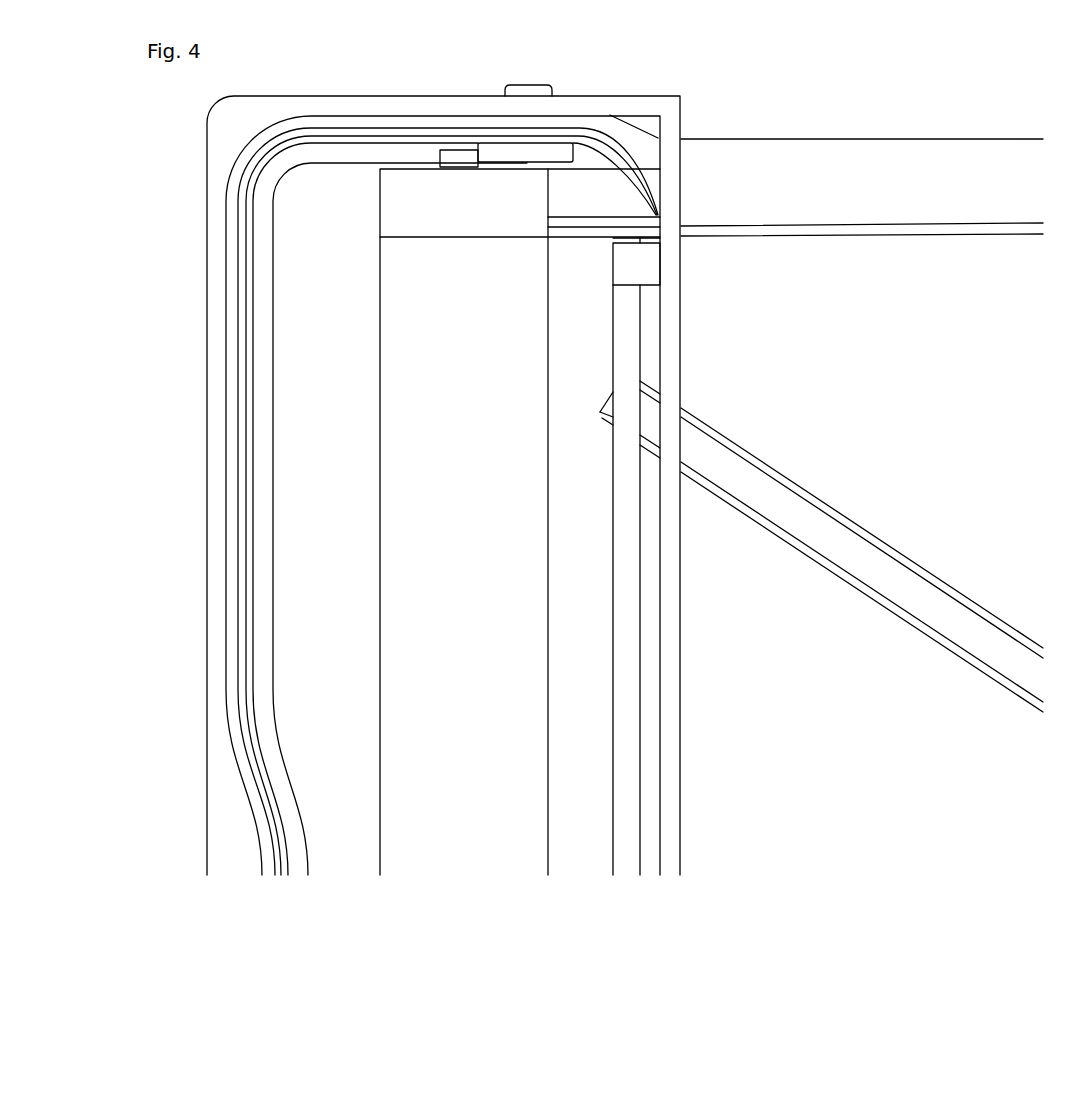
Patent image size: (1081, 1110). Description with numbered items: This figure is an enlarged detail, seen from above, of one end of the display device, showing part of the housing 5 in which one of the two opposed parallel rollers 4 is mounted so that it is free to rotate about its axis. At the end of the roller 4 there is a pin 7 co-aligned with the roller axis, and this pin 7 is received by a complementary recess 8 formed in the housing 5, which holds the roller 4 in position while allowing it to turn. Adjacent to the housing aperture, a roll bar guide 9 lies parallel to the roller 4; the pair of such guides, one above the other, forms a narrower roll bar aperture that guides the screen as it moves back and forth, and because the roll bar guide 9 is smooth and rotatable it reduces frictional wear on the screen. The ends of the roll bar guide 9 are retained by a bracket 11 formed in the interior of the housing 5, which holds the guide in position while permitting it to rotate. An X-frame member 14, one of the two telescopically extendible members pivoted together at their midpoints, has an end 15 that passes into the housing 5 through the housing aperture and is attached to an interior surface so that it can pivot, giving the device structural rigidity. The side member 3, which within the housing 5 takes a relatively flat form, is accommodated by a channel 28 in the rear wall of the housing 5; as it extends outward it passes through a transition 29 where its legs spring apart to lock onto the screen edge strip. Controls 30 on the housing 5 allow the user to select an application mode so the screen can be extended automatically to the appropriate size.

The side member 3 is at (873, 173).
The roller 4 is at (407, 294).
The housing 5 is at (287, 108).
The pin 7 is at (468, 160).
The recess 8 is at (457, 150).
The roll bar guide 9 is at (625, 320).
The bracket 11 is at (638, 265).
The telescopically extendible member 14 is at (818, 532).
The end 15 is at (602, 413).
The channel 28 is at (395, 115).
The transition 29 is at (636, 150).
The controls 30 is at (542, 85).